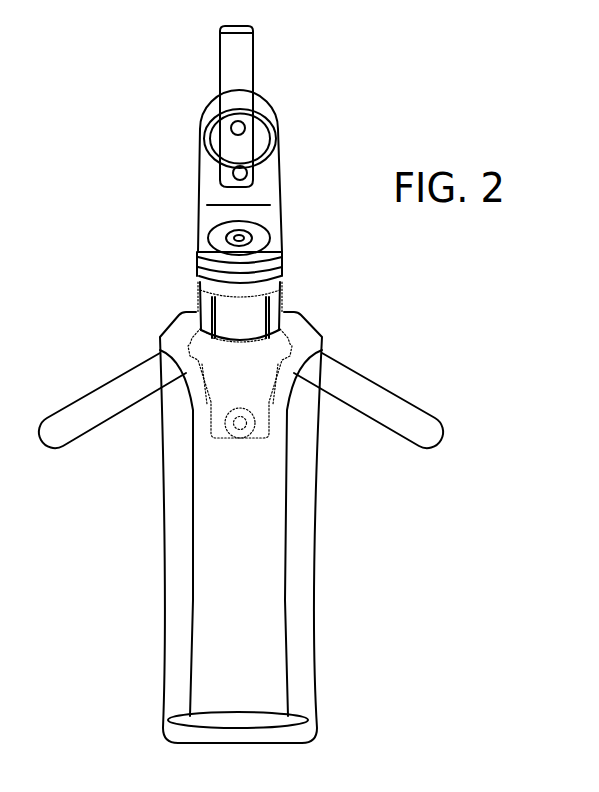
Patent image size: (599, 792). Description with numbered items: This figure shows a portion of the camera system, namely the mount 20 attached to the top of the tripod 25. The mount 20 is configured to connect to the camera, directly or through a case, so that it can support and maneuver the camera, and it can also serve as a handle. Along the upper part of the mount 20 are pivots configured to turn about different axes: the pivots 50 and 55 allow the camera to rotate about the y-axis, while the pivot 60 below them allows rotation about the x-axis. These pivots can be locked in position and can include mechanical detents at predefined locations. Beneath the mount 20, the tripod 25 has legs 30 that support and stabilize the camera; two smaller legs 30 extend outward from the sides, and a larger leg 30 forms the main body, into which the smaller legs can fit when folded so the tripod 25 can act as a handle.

The mount 20 is at (272, 102).
The pivot 50 is at (237, 142).
The pivot 55 is at (232, 236).
The pivot 60 is at (283, 307).
The tripod 25 is at (360, 426).
The legs 30 is at (90, 392).